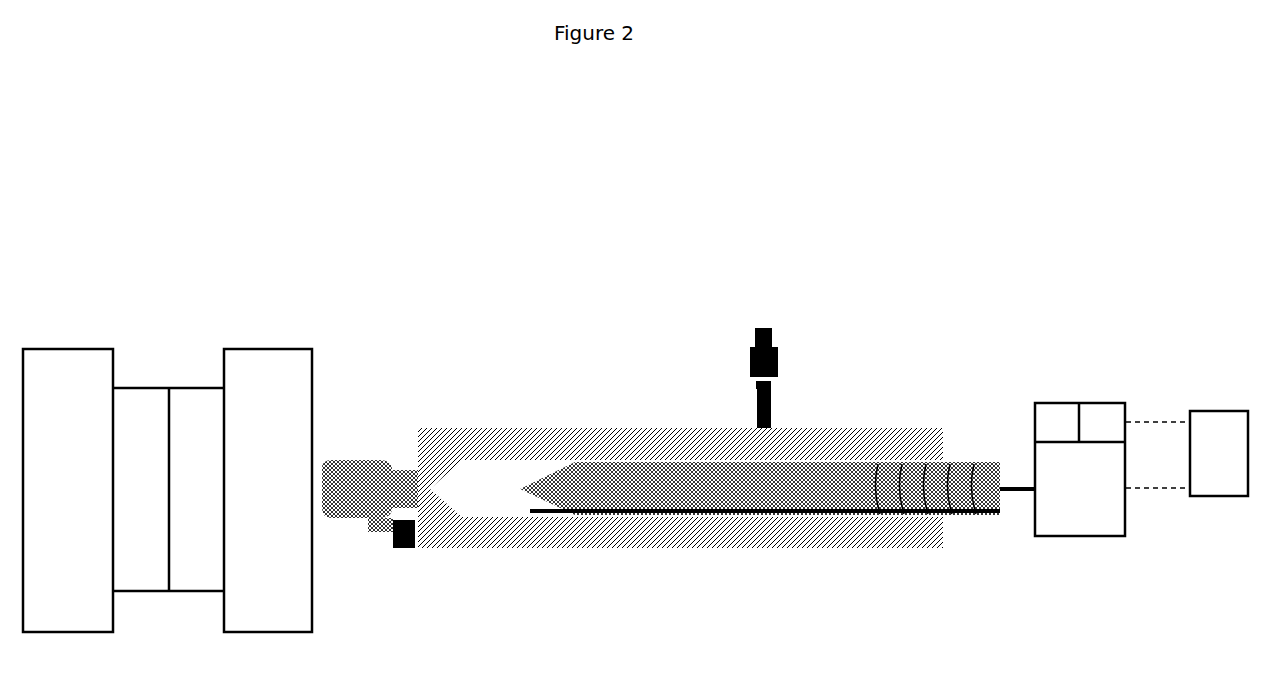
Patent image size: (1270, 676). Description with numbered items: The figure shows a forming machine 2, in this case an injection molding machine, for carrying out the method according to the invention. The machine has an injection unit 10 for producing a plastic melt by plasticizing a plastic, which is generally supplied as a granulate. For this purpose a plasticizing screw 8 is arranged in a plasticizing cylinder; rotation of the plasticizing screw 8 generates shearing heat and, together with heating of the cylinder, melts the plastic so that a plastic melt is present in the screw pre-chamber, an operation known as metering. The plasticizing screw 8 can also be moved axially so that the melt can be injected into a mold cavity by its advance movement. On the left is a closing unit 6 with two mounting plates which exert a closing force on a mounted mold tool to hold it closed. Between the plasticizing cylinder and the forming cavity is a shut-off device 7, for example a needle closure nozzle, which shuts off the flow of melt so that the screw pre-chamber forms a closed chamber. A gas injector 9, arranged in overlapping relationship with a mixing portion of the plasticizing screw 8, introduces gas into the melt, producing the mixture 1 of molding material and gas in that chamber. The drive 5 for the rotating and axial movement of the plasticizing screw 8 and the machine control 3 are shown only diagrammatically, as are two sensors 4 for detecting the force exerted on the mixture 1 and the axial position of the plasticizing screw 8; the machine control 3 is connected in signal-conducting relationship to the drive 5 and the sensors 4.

The mixture 1 is at (489, 483).
The forming machine 2 is at (625, 290).
The machine control 3 is at (1219, 453).
The sensors 4 is at (1080, 422).
The drive 5 is at (1080, 469).
The closing unit 6 is at (158, 304).
The shut-off device 7 is at (319, 470).
The plasticizing screw 8 is at (636, 500).
The gas injector 9 is at (792, 352).
The injection unit 10 is at (852, 280).